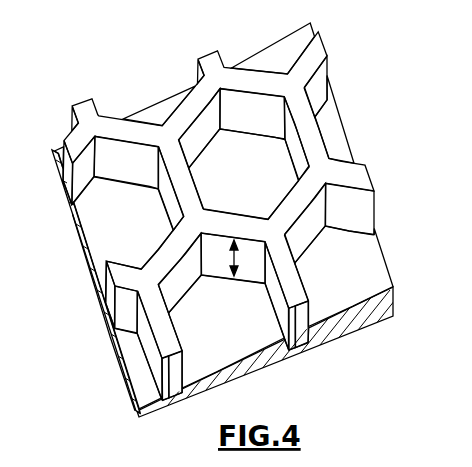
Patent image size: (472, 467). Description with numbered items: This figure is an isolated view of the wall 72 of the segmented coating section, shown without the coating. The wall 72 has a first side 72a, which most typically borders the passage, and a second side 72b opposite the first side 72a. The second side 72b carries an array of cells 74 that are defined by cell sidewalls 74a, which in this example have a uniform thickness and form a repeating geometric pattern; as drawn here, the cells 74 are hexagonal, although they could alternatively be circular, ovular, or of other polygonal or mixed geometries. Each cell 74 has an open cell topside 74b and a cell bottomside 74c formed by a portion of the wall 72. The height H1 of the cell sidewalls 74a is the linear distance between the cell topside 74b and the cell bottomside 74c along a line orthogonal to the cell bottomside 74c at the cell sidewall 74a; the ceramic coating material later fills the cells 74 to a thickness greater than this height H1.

The wall 72 is at (262, 236).
The first side 72a is at (368, 330).
The second side 72b is at (383, 290).
The cells 74 is at (230, 209).
The cell sidewalls 74a is at (291, 178).
The cell topside 74b is at (241, 88).
The cell bottomside 74c is at (233, 334).
The height H1 is at (234, 258).